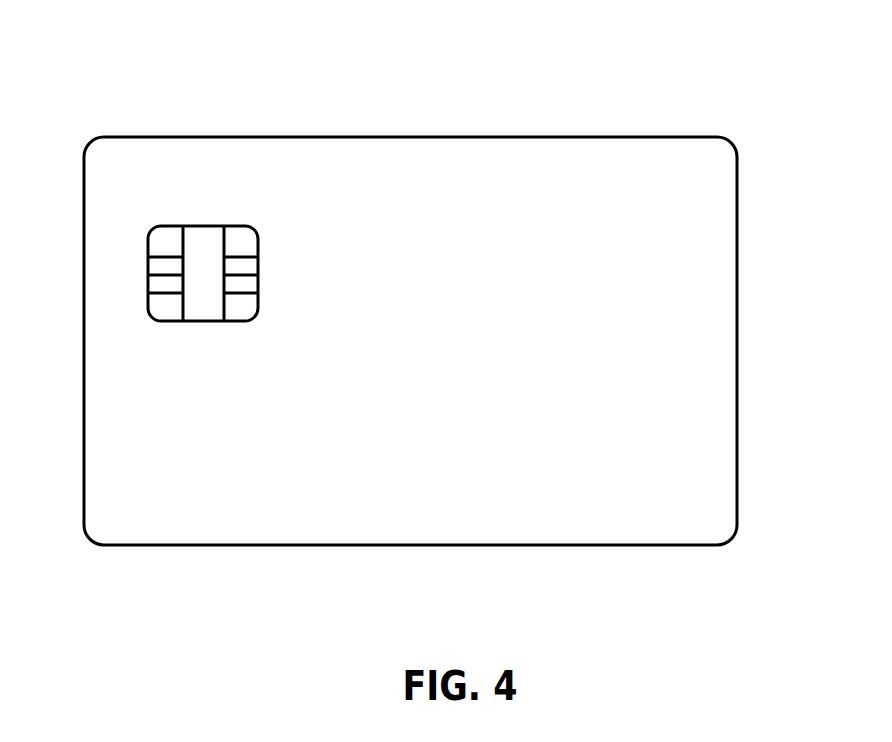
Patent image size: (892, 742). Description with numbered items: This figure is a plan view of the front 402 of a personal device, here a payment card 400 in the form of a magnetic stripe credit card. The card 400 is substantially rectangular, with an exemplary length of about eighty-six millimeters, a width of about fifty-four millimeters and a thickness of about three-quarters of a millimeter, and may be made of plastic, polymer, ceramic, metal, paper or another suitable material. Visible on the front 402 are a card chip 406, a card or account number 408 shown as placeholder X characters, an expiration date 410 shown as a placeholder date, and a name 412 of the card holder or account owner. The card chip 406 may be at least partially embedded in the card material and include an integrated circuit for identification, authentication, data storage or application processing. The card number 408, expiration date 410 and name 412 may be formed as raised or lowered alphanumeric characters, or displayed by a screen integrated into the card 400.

The payment card 400 is at (80, 68).
The front 402 is at (710, 440).
The card chip 406 is at (212, 226).
The card number 408 is at (367, 327).
The expiration date 410 is at (402, 437).
The name 412 is at (282, 517).